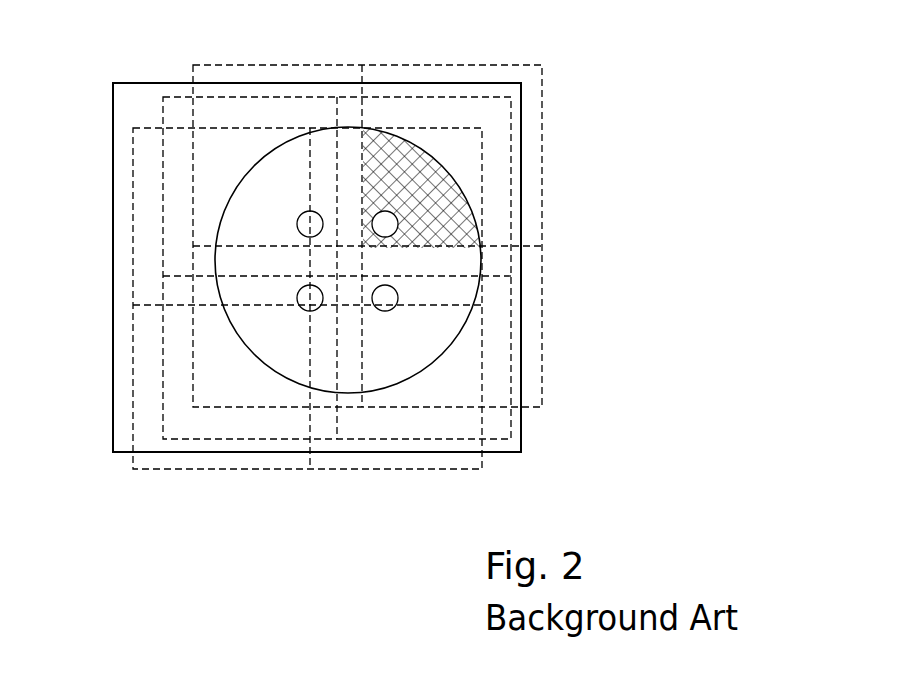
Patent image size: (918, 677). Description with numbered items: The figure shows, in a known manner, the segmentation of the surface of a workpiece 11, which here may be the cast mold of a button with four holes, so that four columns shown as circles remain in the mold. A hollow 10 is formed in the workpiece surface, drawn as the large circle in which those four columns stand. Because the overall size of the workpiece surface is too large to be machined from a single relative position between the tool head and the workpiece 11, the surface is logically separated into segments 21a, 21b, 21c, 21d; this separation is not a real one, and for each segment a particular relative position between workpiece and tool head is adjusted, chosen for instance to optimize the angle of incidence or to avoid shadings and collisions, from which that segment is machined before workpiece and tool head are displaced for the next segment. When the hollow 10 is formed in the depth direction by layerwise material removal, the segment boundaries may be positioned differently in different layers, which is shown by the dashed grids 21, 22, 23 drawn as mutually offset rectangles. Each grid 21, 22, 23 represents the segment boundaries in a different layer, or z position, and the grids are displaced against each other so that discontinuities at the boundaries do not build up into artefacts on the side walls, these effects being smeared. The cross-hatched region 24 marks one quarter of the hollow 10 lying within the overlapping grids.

The hollow 10 is at (243, 188).
The workpiece 11 is at (129, 82).
The grid 21 is at (130, 147).
The segment 21a is at (140, 241).
The segment 21b is at (140, 359).
The segment 21c is at (329, 155).
The segment 21d is at (320, 465).
The grid 22 is at (177, 96).
The grid 23 is at (228, 64).
The hatched overlap region 24 is at (478, 203).